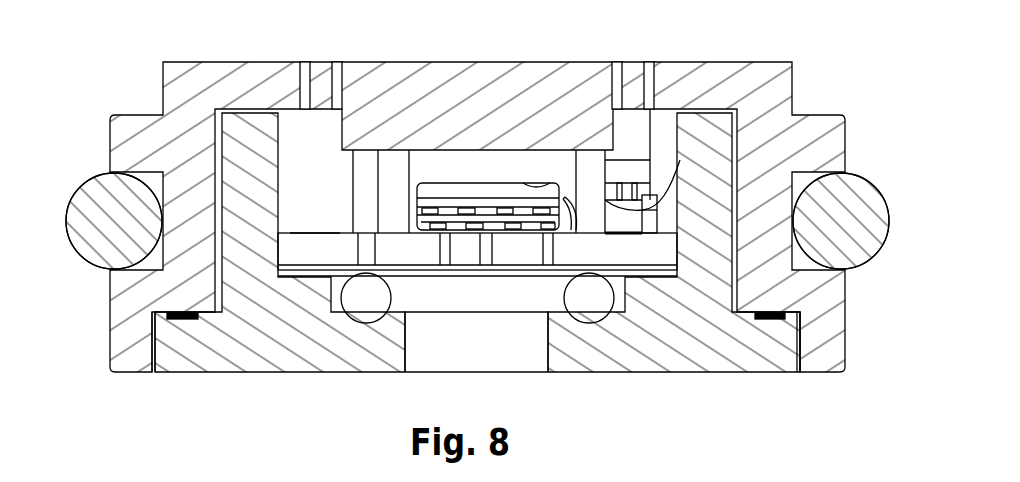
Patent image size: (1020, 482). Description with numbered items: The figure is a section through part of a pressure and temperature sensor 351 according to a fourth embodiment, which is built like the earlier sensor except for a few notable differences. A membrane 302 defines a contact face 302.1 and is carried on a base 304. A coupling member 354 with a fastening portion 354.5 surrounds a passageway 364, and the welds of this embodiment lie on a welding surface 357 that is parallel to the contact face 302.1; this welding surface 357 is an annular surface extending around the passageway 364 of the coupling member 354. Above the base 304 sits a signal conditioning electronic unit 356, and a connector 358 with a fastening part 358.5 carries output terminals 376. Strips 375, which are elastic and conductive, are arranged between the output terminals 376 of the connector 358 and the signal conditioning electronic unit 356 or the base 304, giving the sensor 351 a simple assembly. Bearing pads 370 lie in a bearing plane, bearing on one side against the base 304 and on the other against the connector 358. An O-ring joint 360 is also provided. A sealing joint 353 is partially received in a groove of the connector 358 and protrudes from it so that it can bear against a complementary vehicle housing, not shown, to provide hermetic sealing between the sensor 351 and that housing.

The pressure and temperature sensor 351 is at (463, 215).
The fastening portion 354.5 is at (170, 150).
The sealing joint 353 is at (93, 200).
The base 304 is at (315, 238).
The fastening part 358.5 is at (345, 100).
The bearing pads 370 is at (393, 173).
The connector 358 is at (470, 123).
The signal conditioning electronic unit 356 is at (490, 190).
The output terminals 376 is at (630, 140).
The strips 375 is at (680, 160).
The welding surface 357 is at (183, 325).
The membrane 302 is at (277, 268).
The coupling member 354 is at (285, 337).
The O-ring joint 360 is at (365, 298).
The passageway 364 is at (448, 350).
The contact face 302.1 is at (493, 287).